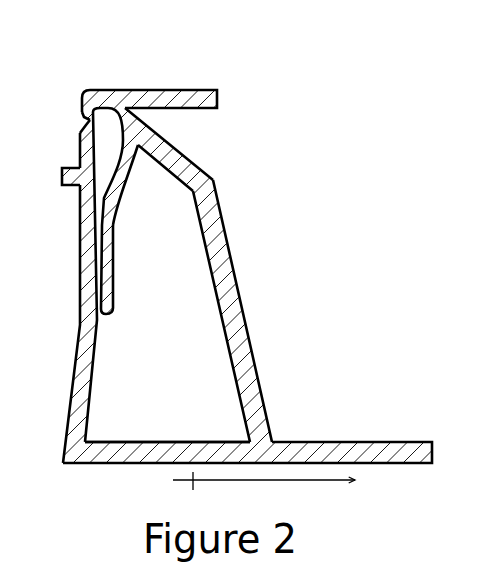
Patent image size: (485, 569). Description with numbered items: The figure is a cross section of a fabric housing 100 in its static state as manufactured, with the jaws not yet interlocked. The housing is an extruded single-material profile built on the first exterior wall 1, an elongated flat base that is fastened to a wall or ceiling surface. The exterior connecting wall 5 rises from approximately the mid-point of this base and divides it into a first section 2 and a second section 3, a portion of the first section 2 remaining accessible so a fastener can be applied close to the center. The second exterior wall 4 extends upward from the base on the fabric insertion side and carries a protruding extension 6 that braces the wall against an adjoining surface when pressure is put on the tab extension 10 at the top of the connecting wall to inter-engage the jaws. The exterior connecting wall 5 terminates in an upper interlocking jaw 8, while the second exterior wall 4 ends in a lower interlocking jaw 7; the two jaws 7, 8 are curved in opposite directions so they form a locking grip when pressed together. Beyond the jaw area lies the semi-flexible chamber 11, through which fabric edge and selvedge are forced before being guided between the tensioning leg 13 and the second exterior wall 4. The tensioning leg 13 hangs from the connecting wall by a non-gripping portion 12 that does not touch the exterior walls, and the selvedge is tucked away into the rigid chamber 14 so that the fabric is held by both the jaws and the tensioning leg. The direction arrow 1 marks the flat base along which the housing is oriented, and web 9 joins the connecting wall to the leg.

The fabric housing 100 is at (242, 284).
The first exterior wall 1 is at (257, 482).
The first section 2 is at (314, 432).
The second section 3 is at (209, 431).
The second exterior wall 4 is at (74, 370).
The exterior connecting wall 5 is at (244, 296).
The protruding extension 6 is at (60, 176).
The interlocking jaw 7 is at (80, 122).
The interlocking jaw 8 is at (81, 112).
The inclined web 9 is at (188, 161).
The tab extension 10 is at (145, 79).
The semi-flexible chamber 11 is at (108, 166).
The non-gripping portion 12 is at (133, 186).
The tensioning leg 13 is at (116, 243).
The rigid chamber 14 is at (156, 330).